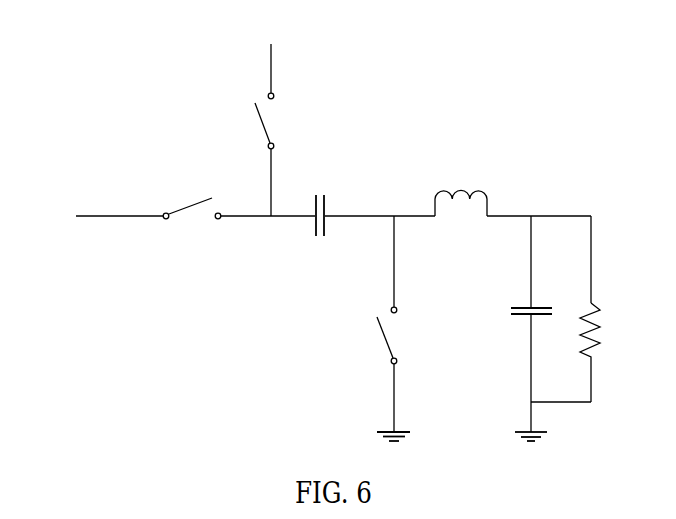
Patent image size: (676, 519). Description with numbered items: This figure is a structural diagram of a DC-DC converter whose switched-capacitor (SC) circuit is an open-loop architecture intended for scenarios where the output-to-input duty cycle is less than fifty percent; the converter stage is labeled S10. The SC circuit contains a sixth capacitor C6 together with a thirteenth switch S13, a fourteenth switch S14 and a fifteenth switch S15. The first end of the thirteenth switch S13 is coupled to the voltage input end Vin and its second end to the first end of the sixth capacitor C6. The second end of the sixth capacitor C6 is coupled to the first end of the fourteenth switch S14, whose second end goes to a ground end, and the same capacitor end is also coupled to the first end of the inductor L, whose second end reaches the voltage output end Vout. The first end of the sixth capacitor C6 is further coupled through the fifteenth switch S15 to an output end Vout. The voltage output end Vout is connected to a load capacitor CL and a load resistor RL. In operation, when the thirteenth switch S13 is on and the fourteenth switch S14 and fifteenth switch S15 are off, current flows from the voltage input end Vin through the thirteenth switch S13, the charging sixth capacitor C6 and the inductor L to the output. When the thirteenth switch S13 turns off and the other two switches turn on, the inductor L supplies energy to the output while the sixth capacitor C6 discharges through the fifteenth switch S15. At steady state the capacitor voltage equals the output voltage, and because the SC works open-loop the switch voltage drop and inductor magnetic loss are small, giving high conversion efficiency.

The voltage input end Vin is at (270, 53).
The voltage output end Vout is at (308, 245).
The thirteenth switch S13 is at (289, 154).
The fifteenth switch S15 is at (239, 225).
The fourteenth switch S14 is at (412, 374).
The converter stage S10 is at (428, 209).
The sixth capacitor C6 is at (371, 201).
The inductor L is at (483, 189).
The load capacitor CL is at (545, 328).
The load resistor RL is at (610, 352).